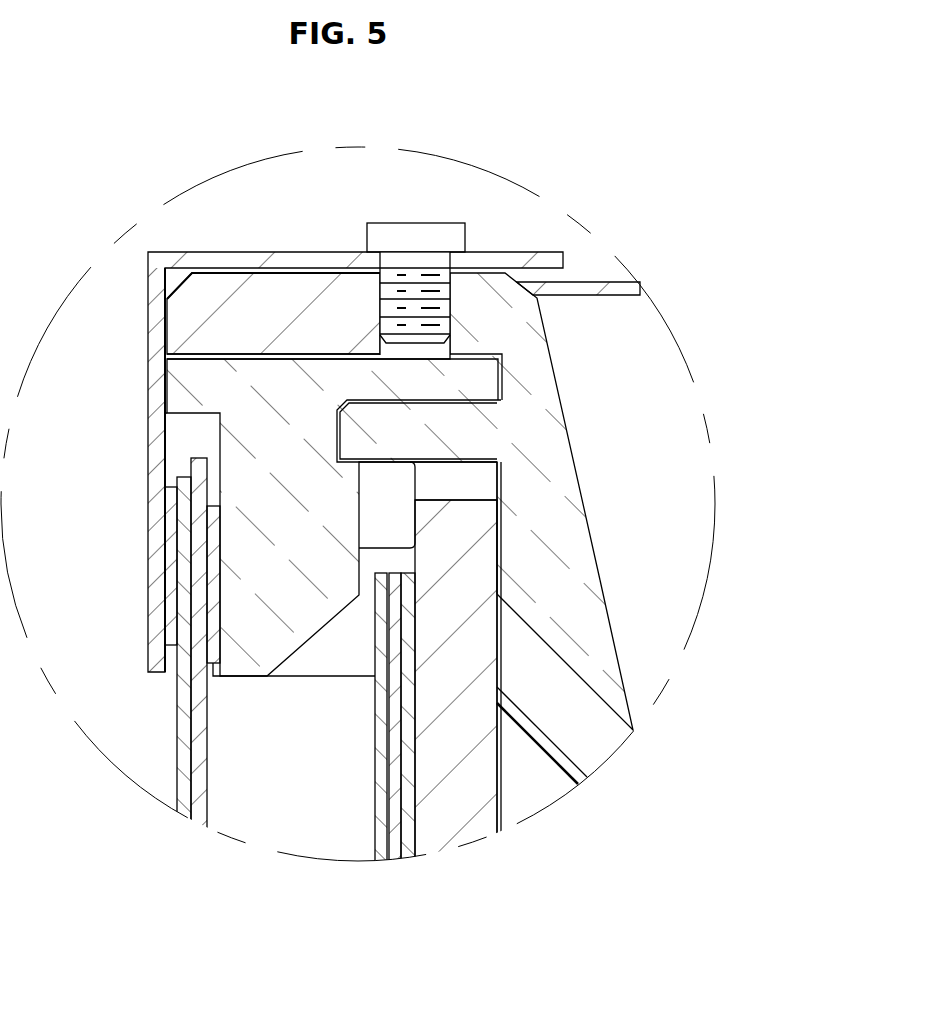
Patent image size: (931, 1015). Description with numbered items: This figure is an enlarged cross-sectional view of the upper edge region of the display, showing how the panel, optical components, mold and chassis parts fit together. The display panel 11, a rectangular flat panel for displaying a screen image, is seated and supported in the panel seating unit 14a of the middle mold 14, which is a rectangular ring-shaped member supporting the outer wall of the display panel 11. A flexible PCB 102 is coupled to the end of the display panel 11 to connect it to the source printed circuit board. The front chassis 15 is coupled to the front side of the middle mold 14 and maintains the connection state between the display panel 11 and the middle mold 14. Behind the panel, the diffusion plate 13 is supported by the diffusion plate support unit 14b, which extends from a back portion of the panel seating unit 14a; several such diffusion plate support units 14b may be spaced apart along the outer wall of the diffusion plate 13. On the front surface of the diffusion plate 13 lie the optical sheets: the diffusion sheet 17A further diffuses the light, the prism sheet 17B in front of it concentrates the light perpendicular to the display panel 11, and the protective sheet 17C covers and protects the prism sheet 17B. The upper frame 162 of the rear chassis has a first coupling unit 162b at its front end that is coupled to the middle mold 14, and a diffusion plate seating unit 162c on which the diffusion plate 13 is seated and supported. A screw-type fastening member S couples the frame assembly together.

The fastening member S is at (387, 231).
The display panel 11 is at (165, 723).
The diffusion plate 13 is at (487, 803).
The middle mold 14 is at (205, 437).
The panel seating unit 14a is at (290, 613).
The diffusion plate support unit 14b is at (403, 483).
The front chassis 15 is at (136, 318).
The diffusion sheet 17A is at (413, 823).
The prism sheet 17B is at (398, 855).
The protective sheet 17C is at (380, 825).
The flexible PCB 102 is at (602, 287).
The upper frame 162 is at (614, 569).
The first coupling unit 162b is at (362, 427).
The diffusion plate seating unit 162c is at (606, 678).